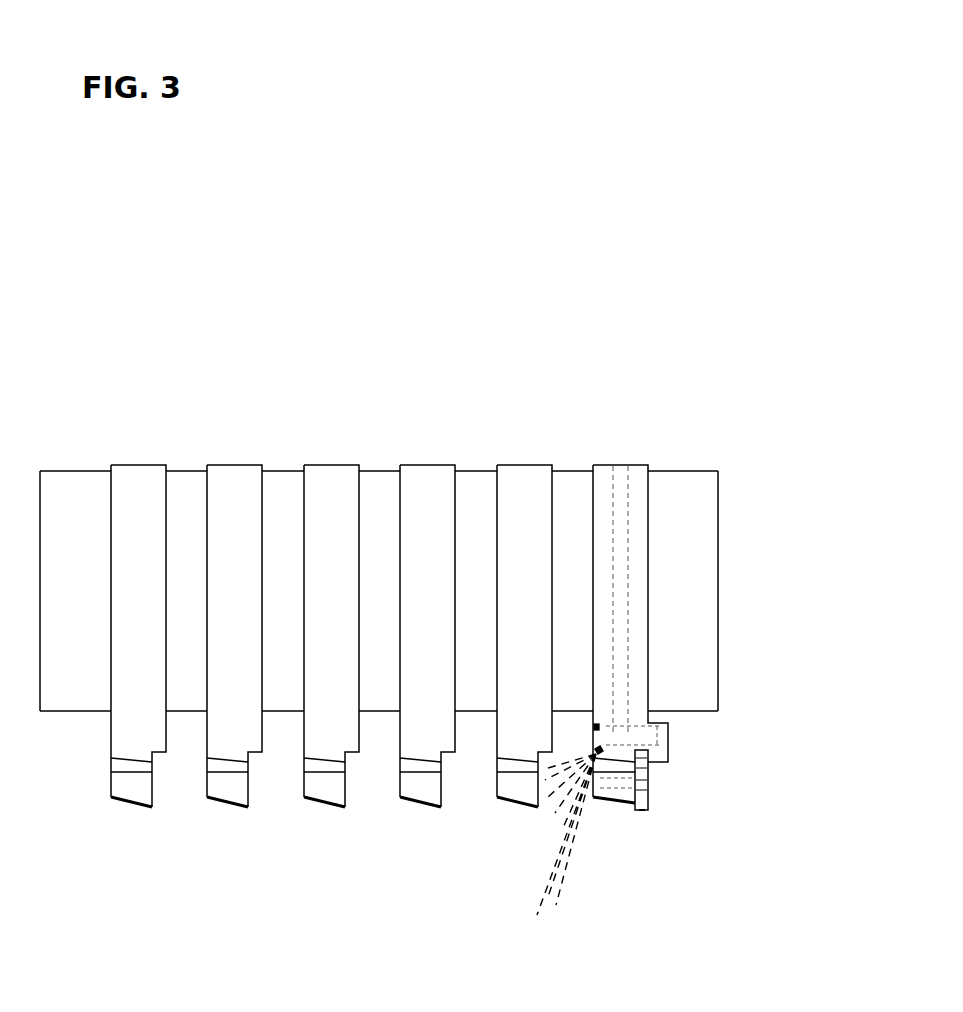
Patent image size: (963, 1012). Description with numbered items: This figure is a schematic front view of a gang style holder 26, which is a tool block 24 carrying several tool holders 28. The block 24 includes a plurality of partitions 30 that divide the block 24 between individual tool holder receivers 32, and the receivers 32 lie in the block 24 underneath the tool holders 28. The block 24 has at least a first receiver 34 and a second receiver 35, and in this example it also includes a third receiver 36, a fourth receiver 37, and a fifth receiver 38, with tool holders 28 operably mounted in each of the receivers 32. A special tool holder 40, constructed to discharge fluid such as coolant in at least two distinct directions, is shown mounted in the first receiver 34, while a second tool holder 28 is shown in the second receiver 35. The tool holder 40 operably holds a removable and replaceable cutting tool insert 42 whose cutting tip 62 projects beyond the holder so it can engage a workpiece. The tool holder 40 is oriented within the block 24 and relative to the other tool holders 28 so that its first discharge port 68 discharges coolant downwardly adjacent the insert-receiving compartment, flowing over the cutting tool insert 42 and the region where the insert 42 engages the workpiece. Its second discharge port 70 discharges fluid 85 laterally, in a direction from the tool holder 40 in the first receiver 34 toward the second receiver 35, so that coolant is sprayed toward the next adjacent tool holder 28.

The block 24 is at (157, 362).
The gang style holder 26 is at (55, 482).
The tool holders 28 is at (155, 682).
The partitions 30 is at (182, 483).
The tool holder receivers 32 is at (110, 720).
The first receiver 34 is at (650, 630).
The second receiver 35 is at (497, 748).
The third receiver 36 is at (304, 486).
The fourth receiver 37 is at (207, 486).
The fifth receiver 38 is at (111, 490).
The tool holder 40 is at (653, 545).
The cutting tool insert 42 is at (650, 797).
The cutting tip 62 is at (641, 812).
The first discharge port 68 is at (667, 760).
The second discharge port 70 is at (594, 752).
The fluid 85 is at (565, 838).